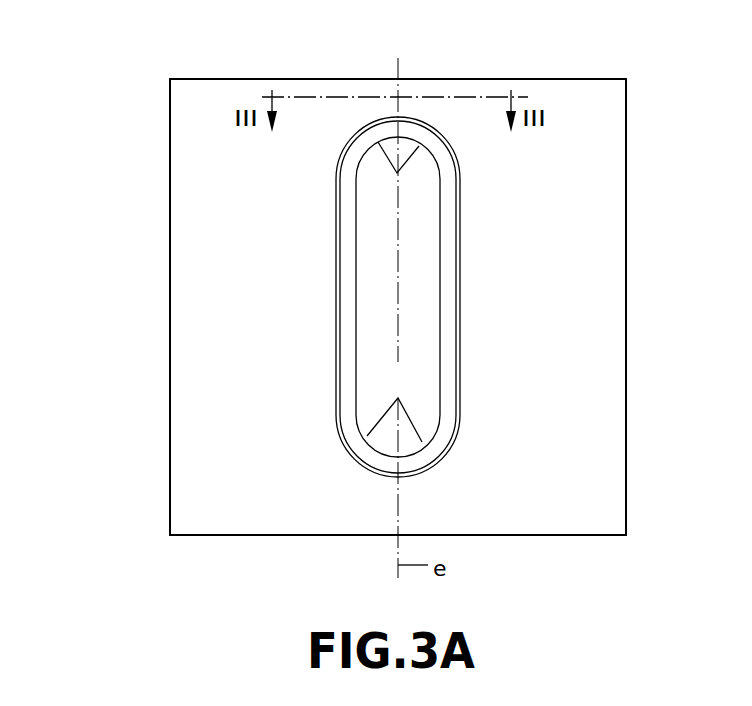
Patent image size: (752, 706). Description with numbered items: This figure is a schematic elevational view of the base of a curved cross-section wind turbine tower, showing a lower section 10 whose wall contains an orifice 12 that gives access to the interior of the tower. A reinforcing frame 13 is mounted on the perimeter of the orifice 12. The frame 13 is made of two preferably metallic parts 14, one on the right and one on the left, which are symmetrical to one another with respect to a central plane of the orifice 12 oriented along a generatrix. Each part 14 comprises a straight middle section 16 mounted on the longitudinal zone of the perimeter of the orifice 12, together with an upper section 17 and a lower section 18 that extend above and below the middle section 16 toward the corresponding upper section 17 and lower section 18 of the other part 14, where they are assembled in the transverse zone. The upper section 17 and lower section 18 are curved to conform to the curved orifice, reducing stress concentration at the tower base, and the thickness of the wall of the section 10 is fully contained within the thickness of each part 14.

The section 10 is at (583, 427).
The orifice 12 is at (400, 313).
The reinforcing frame 13 is at (347, 143).
The part 14 is at (328, 188).
The middle section 16 is at (345, 247).
The upper section 17 is at (398, 174).
The lower section 18 is at (394, 407).